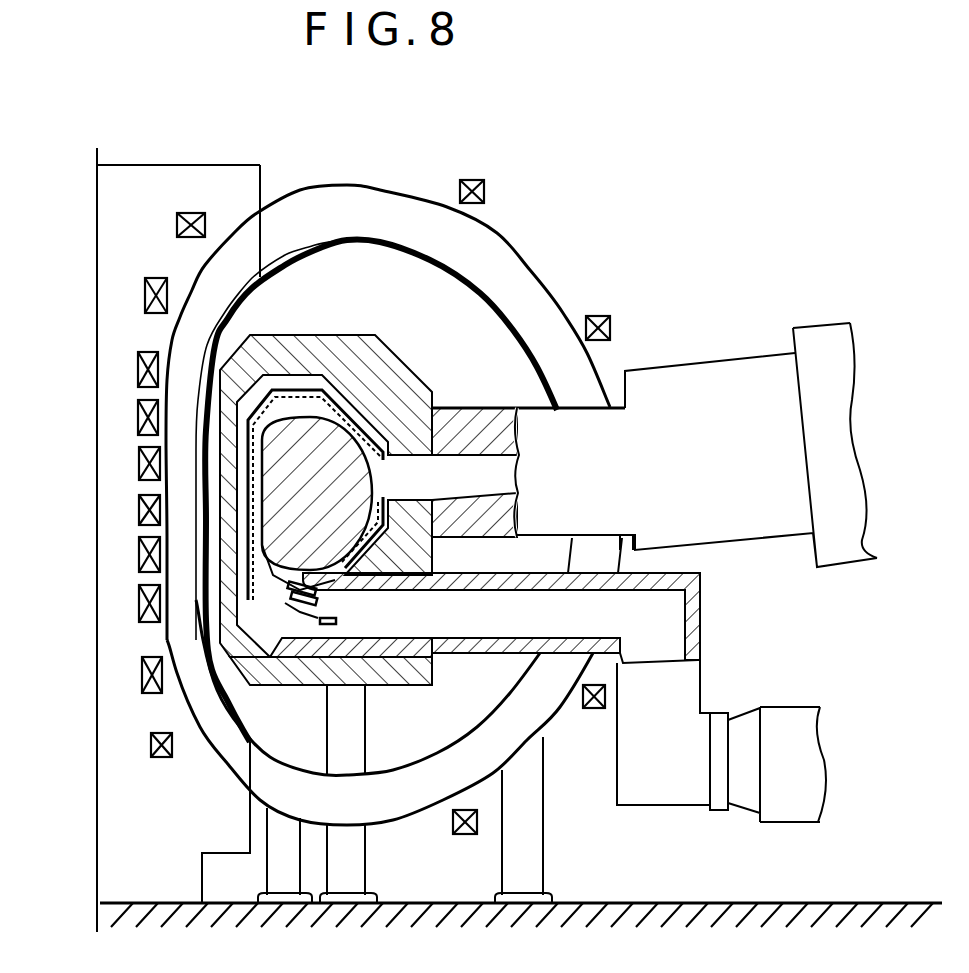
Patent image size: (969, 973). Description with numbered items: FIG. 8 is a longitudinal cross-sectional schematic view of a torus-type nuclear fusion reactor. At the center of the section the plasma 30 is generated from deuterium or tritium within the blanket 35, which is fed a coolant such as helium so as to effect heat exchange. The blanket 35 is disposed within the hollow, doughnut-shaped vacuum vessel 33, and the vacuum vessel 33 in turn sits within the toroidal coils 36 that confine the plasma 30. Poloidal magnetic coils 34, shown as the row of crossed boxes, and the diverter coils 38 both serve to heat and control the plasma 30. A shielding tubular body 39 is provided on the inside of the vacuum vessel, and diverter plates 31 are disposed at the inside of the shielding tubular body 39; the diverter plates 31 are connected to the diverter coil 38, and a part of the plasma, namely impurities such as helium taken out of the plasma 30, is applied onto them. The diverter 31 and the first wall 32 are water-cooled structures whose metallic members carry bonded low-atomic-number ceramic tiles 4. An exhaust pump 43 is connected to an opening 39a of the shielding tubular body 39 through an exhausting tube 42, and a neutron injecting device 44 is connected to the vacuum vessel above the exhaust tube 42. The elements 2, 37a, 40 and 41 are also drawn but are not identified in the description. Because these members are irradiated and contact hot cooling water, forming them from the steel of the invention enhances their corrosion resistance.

The tokamak fusion device 2 is at (104, 368).
The ceramic tiles 4 is at (593, 709).
The plasma 30 is at (388, 432).
The diverter plates 31 is at (295, 600).
The first wall 32 is at (360, 392).
The vacuum vessel 33 is at (368, 356).
The poloidal magnetic coils 34 is at (138, 428).
The blanket 35 is at (300, 382).
The toroidal coils 36 is at (538, 276).
The vacuum vessel support leg 37a is at (393, 688).
The diverter coils 38 is at (145, 300).
The shielding tubular body 39 is at (434, 656).
The opening 39a is at (432, 622).
The divertor target 40 is at (337, 621).
The foundation 41 is at (125, 903).
The exhausting tube 42 is at (688, 572).
The exhaust pump 43 is at (783, 708).
The neutron injecting device 44 is at (806, 330).